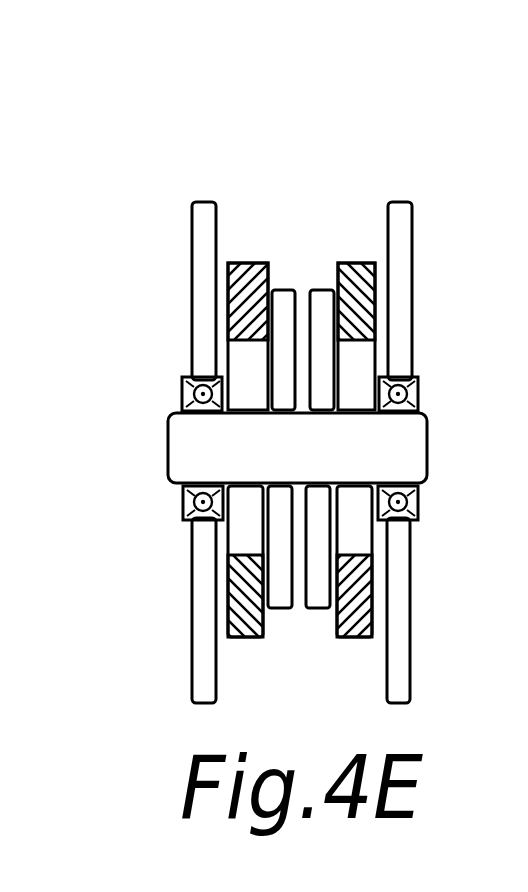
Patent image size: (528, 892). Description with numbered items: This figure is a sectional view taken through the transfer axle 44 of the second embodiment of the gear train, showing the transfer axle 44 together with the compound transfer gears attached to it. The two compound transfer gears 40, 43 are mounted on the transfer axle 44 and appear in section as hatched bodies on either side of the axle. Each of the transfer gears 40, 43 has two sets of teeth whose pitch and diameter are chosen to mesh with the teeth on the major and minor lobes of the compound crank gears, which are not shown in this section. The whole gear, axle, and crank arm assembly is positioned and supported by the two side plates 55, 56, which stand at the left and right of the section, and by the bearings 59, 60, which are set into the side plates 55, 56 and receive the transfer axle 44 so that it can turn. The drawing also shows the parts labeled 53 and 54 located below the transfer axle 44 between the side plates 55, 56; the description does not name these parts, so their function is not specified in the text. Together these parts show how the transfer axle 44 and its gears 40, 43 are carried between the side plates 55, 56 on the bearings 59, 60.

The compound transfer gear 40 is at (357, 263).
The compound transfer gear 43 is at (245, 265).
The transfer axle 44 is at (395, 450).
The spacers 53 is at (324, 612).
The lower bushings 54 is at (248, 598).
The side plate 55 is at (162, 410).
The side plate 56 is at (442, 410).
The bearing 59 is at (173, 417).
The bearing 60 is at (415, 383).